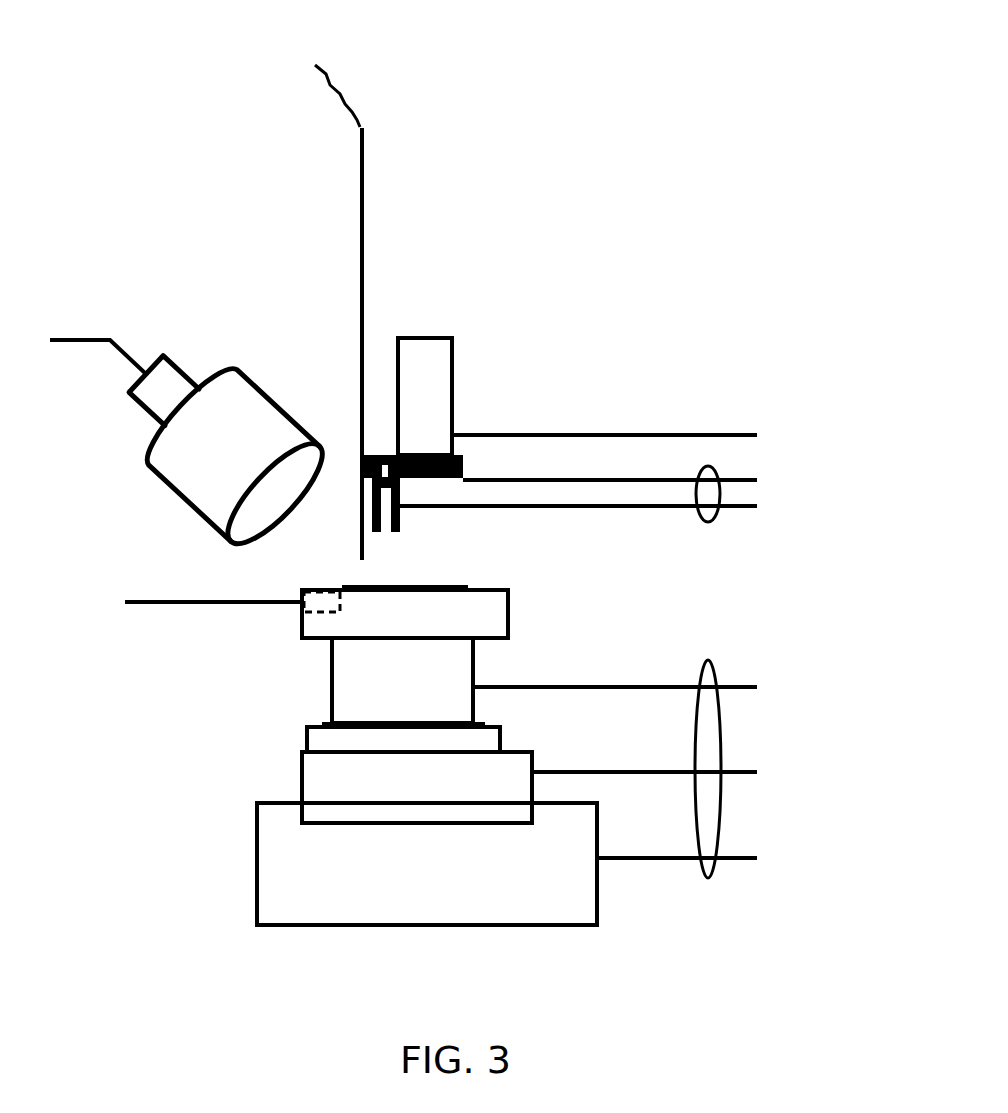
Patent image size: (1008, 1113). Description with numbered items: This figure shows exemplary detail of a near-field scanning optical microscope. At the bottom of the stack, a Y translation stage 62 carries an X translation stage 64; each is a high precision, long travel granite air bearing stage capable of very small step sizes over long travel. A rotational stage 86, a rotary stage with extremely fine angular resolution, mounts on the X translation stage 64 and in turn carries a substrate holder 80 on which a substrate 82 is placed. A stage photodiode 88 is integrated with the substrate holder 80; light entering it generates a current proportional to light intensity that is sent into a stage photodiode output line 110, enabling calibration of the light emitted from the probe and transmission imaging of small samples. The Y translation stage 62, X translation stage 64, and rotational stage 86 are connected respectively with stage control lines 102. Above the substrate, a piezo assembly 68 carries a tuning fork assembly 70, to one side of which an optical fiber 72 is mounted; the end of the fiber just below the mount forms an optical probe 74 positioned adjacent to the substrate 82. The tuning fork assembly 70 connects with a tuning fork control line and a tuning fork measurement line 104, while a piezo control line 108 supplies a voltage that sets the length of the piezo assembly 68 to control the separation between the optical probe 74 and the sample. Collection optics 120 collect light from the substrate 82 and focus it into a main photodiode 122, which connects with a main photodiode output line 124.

The Y translation stage 62 is at (300, 872).
The X translation stage 64 is at (350, 788).
The piezo assembly 68 is at (433, 392).
The tuning fork assembly 70 is at (400, 515).
The optical fiber 72 is at (362, 130).
The optical probe 74 is at (368, 548).
The substrate holder 80 is at (487, 618).
The substrate 82 is at (468, 582).
The rotational stage 86 is at (362, 688).
The stage photodiode 88 is at (315, 598).
The stage control lines 102 is at (713, 872).
The tuning fork control line and tuning fork measurement line 104 is at (785, 590).
The piezo control line 108 is at (760, 433).
The stage photodiode output line 110 is at (147, 600).
The collection optics 120 is at (236, 368).
The main photodiode 122 is at (173, 358).
The main photodiode output line 124 is at (122, 345).